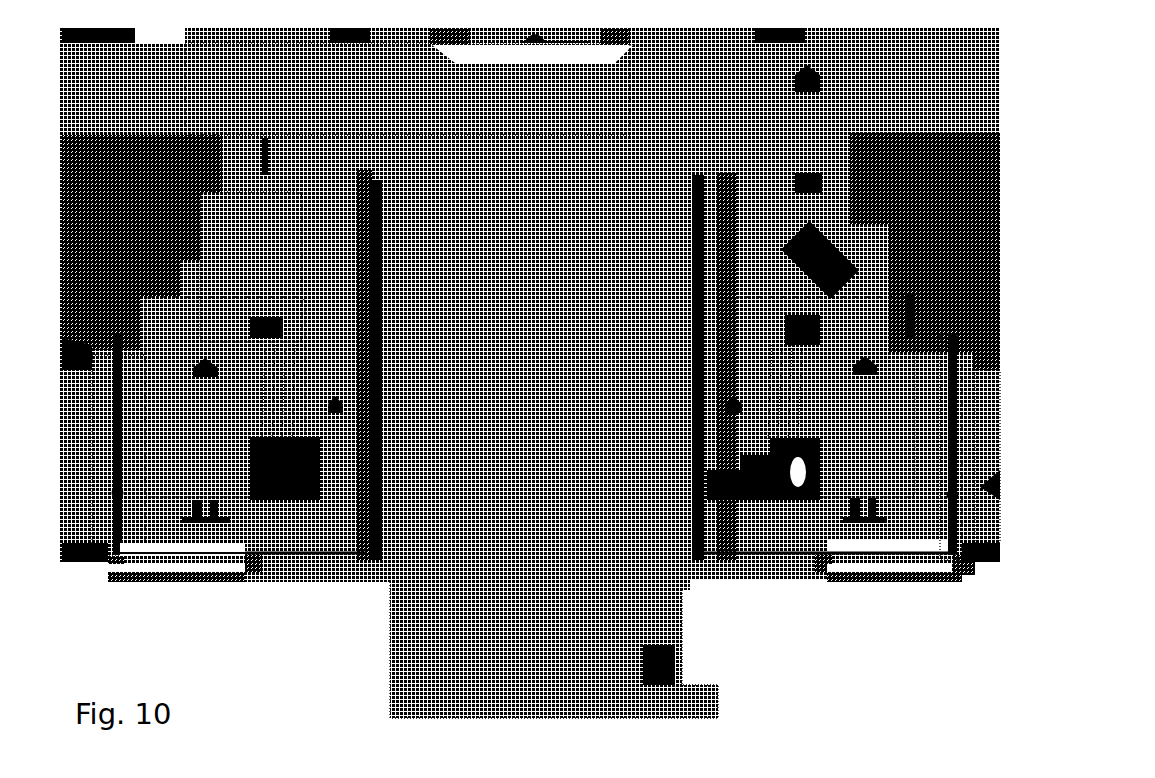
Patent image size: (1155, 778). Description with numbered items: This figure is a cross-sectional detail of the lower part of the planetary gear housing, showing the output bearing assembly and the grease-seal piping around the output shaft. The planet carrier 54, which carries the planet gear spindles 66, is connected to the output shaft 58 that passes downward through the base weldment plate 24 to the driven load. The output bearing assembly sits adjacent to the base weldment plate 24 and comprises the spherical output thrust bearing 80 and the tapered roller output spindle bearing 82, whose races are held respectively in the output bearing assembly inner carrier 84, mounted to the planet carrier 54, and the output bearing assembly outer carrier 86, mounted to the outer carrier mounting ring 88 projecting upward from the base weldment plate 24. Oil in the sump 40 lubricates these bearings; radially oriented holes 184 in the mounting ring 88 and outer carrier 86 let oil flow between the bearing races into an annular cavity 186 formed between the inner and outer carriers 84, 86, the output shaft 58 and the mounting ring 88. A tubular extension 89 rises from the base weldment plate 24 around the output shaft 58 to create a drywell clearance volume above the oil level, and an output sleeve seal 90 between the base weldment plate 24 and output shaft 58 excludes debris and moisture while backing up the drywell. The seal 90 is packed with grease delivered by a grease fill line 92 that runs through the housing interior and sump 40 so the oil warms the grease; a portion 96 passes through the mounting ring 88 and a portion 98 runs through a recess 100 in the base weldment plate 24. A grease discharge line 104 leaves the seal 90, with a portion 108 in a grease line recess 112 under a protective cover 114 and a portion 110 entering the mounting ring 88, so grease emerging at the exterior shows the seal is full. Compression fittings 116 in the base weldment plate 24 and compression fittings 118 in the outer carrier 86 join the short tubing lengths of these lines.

The base weldment plate 24 is at (75, 553).
The sump 40 is at (1003, 258).
The planet carrier 54 is at (88, 73).
The output shaft 58 is at (395, 702).
The planet gear spindles 66 is at (230, 88).
The output thrust bearing 80 is at (828, 227).
The output spindle bearing 82 is at (808, 393).
The output bearing assembly inner carrier 84 is at (227, 165).
The output bearing assembly outer carrier 86 is at (905, 357).
The outer carrier mounting ring 88 is at (975, 384).
The tubular extension 89 is at (372, 185).
The output sleeve seal 90 is at (705, 575).
The grease fill line 92 is at (953, 332).
The portion of the grease fill line 96 is at (957, 402).
The portion of the grease fill line 98 is at (880, 557).
The recess 100 is at (960, 567).
The grease discharge line 104 is at (113, 332).
The portion of the discharge line 108 is at (188, 560).
The portion of the discharge line 110 is at (113, 407).
The grease line recess 112 is at (125, 567).
The protective cover 114 is at (143, 577).
The compression fittings 116 is at (252, 563).
The compression fittings 118 is at (108, 549).
The radially oriented holes 184 is at (270, 463).
The annular cavity 186 is at (789, 493).